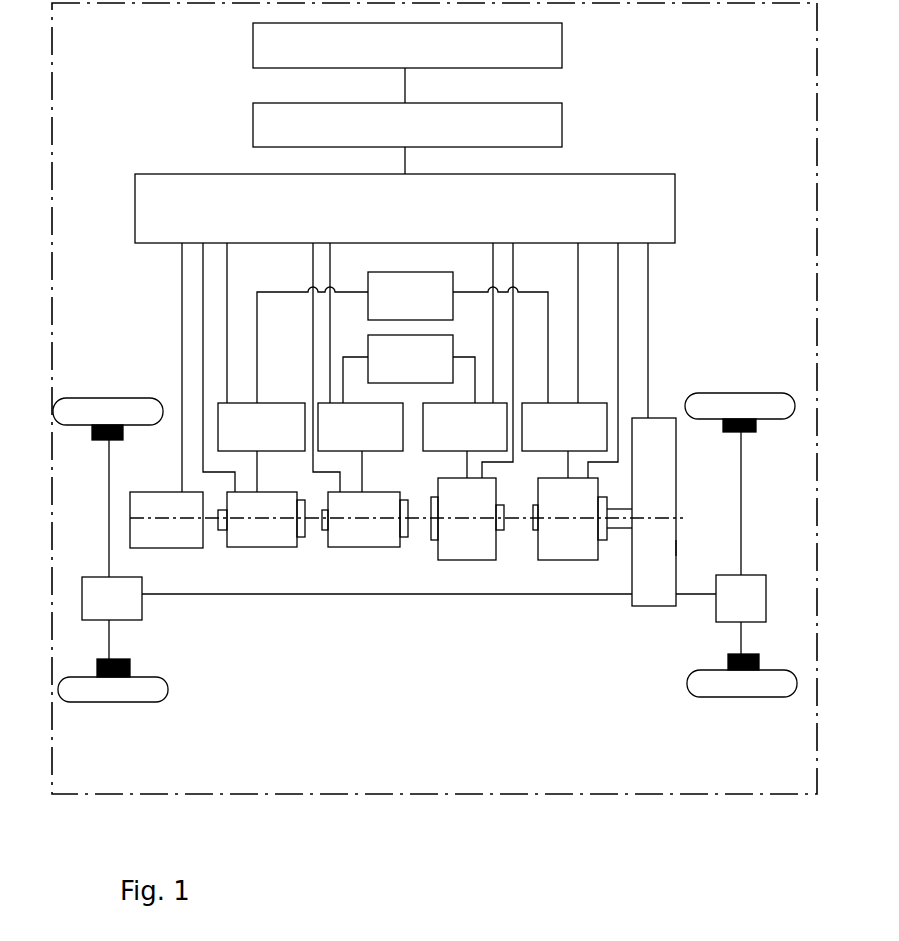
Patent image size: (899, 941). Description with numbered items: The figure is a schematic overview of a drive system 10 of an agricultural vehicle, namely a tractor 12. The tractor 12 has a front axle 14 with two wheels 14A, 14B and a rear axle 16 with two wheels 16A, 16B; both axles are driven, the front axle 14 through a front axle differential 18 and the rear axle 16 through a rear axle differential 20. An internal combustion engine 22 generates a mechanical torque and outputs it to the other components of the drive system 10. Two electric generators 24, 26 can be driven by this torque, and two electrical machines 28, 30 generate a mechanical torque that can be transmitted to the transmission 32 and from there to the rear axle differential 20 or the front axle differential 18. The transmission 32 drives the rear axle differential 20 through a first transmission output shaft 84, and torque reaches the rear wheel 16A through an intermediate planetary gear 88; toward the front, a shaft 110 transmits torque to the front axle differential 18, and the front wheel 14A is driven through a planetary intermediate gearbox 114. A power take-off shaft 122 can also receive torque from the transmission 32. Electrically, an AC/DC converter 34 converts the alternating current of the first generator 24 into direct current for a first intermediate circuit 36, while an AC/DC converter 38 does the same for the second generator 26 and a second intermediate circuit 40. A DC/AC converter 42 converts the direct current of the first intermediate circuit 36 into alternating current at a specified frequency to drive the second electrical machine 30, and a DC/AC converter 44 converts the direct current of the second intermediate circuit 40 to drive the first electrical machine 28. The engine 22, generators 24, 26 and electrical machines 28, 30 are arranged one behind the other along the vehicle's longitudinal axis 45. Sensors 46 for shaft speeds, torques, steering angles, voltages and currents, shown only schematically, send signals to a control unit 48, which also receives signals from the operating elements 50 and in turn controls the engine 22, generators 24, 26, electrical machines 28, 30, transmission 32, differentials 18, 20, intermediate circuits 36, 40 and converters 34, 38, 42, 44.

The drive system 10 is at (153, 367).
The tractor 12 is at (417, 794).
The front axle 14 is at (109, 470).
The front wheel 14A is at (88, 685).
The front wheel 14B is at (93, 413).
The rear axle 16 is at (741, 502).
The rear wheel 16A is at (722, 685).
The rear wheel 16B is at (720, 410).
The front axle differential 18 is at (95, 577).
The rear axle differential 20 is at (747, 590).
The internal combustion engine 22 is at (166, 520).
The first electric generator 24 is at (247, 535).
The second electric generator 26 is at (360, 535).
The first electrical machine 28 is at (465, 538).
The second electrical machine 30 is at (563, 538).
The transmission 32 is at (654, 512).
The AC/DC converter 34 is at (261, 447).
The first intermediate circuit 36 is at (402, 337).
The AC/DC converter 38 is at (360, 447).
The second intermediate circuit 40 is at (409, 369).
The DC/AC converter 42 is at (564, 440).
The DC/AC converter 44 is at (465, 440).
The vehicle longitudinal axis 45 is at (680, 514).
The sensors 46 is at (405, 319).
The control unit 48 is at (407, 107).
The operating elements 50 is at (407, 45).
The first transmission output shaft 84 is at (698, 594).
The intermediate planetary gear 88 is at (757, 425).
The shaft 110 is at (160, 594).
The planetary intermediate gearbox 114 is at (125, 433).
The power take-off shaft 122 is at (678, 548).